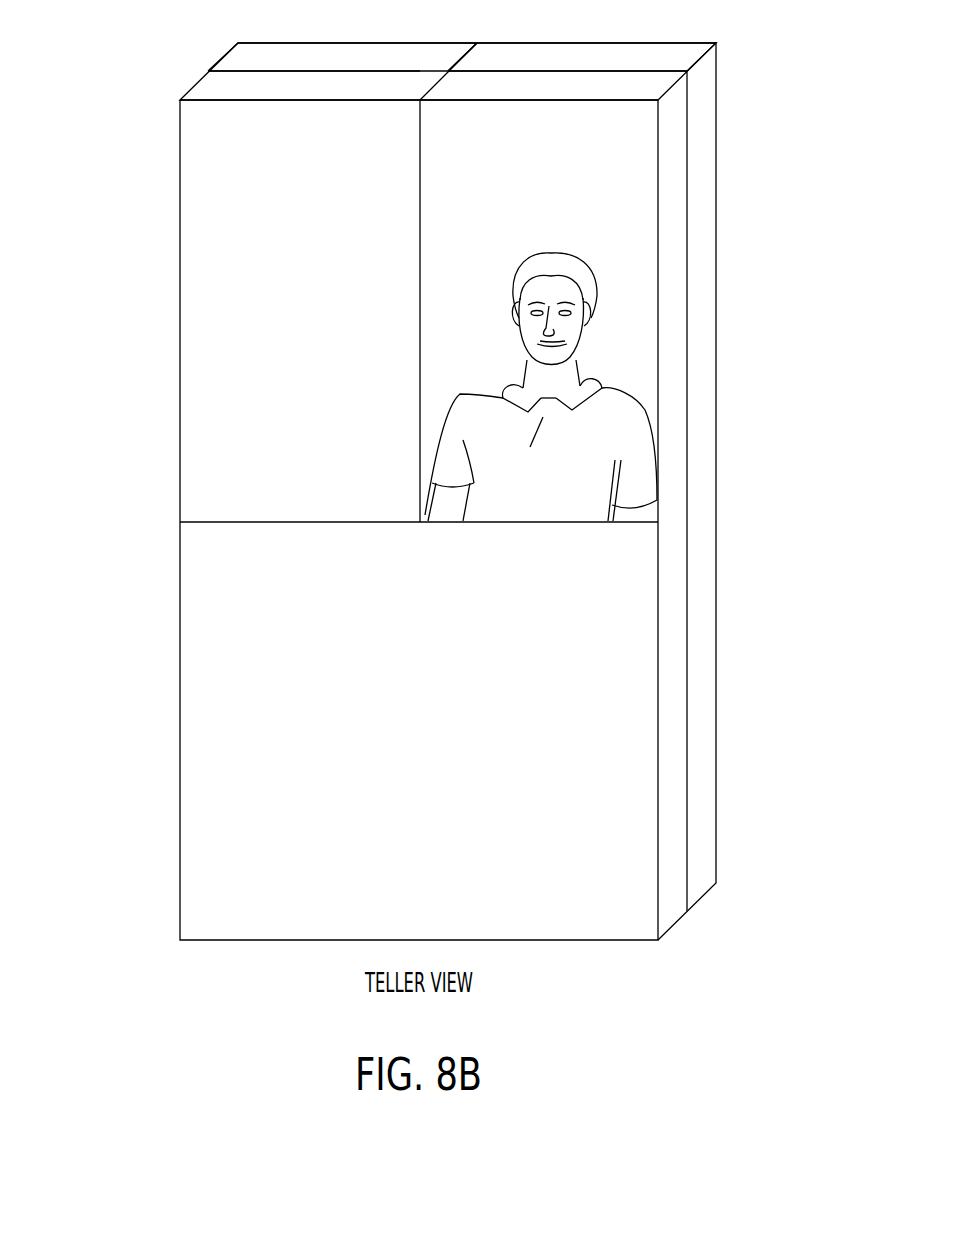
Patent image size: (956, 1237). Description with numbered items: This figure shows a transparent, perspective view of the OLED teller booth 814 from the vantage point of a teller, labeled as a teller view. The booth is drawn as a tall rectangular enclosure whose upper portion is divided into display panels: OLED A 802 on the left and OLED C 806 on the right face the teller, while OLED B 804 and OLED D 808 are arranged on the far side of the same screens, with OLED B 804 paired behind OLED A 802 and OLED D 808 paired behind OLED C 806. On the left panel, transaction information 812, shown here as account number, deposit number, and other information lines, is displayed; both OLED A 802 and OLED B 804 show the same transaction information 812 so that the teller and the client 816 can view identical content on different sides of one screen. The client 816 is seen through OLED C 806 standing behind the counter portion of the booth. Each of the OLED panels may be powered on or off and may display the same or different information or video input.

The OLED A 802 is at (362, 90).
The OLED B 804 is at (413, 58).
The OLED C 806 is at (595, 90).
The OLED D 808 is at (645, 58).
The transaction information 812 is at (248, 328).
The OLED teller booth 814 is at (610, 545).
The client 816 is at (603, 388).